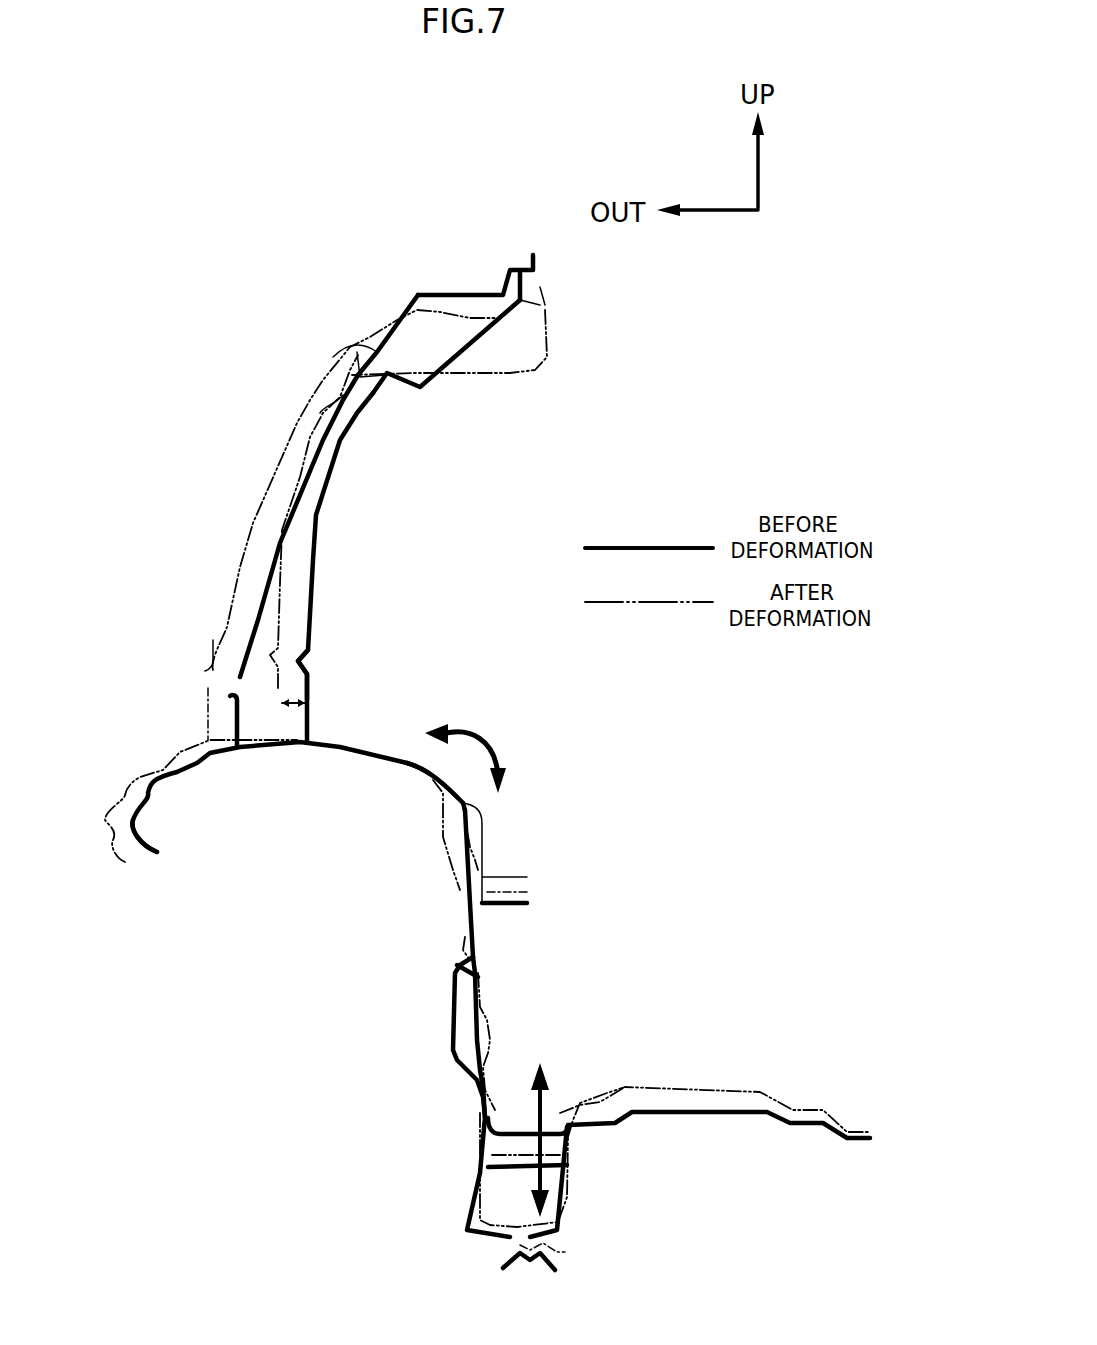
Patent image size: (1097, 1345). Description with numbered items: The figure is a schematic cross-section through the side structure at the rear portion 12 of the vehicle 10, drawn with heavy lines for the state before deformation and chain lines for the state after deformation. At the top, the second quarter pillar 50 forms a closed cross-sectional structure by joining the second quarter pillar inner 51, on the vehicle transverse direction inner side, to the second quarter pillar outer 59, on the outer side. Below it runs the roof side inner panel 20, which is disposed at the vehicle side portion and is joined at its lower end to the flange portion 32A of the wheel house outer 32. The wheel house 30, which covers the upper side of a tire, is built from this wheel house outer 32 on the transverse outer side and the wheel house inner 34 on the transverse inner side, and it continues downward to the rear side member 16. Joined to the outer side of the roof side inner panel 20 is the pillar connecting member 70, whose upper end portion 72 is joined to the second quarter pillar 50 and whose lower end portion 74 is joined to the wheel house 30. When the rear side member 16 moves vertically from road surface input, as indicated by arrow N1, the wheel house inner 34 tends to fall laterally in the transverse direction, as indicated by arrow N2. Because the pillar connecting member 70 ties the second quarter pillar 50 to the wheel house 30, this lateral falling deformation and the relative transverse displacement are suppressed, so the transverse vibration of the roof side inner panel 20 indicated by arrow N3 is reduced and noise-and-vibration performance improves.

The vehicle 10 is at (670, 327).
The rear portion 12 is at (670, 400).
The rear side member 16 is at (570, 1183).
The roof side inner panel 20 is at (315, 548).
The wheel house 30 is at (368, 748).
The wheel house outer 32 is at (180, 773).
The flange portion 32A is at (308, 690).
The wheel house inner 34 is at (407, 767).
The second quarter pillar 50 is at (455, 292).
The second quarter pillar inner 51 is at (493, 337).
The second quarter pillar outer 59 is at (482, 290).
The pillar connecting member 70 is at (265, 490).
The upper end portion 72 is at (358, 352).
The lower end portion 74 is at (233, 730).
The arrow N1 is at (543, 1100).
The arrow N2 is at (487, 733).
The arrow N3 is at (292, 713).